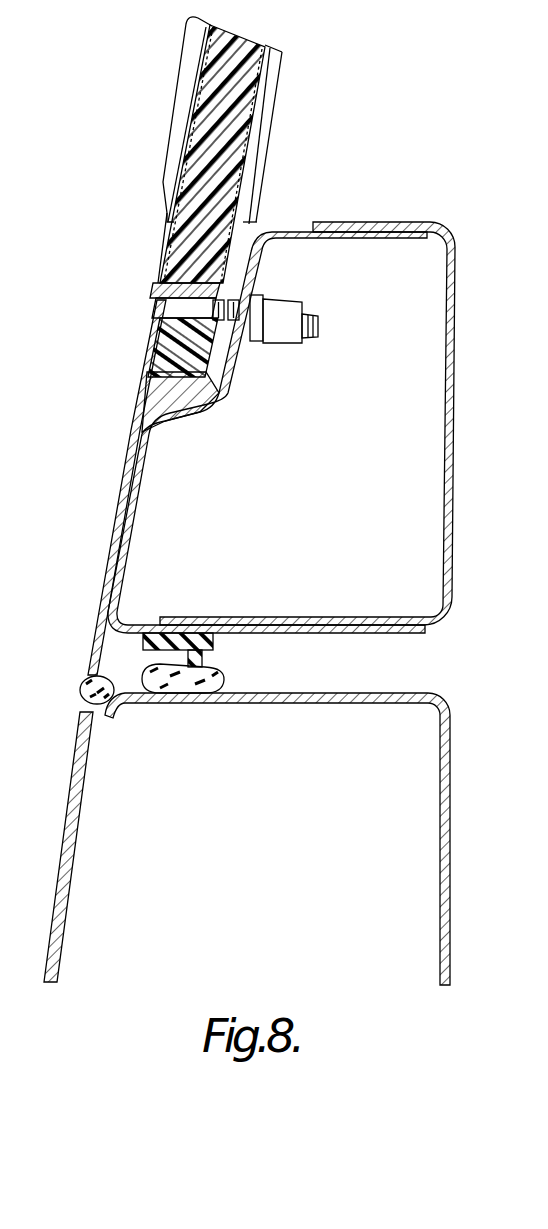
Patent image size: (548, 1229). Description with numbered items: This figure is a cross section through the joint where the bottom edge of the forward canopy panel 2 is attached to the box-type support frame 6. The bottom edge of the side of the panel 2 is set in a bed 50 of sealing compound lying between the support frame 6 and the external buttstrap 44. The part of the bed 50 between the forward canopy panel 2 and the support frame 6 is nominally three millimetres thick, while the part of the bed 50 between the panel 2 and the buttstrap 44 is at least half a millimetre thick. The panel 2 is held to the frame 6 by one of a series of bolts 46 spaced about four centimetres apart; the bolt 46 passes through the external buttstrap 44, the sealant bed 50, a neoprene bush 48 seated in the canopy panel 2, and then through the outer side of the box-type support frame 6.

The forward canopy panel 2 is at (203, 85).
The box-type support frame 6 is at (428, 427).
The buttstrap 44 is at (120, 508).
The bolt 46 is at (173, 307).
The neoprene bush 48 is at (173, 282).
The bed of sealing compound 50 is at (162, 390).